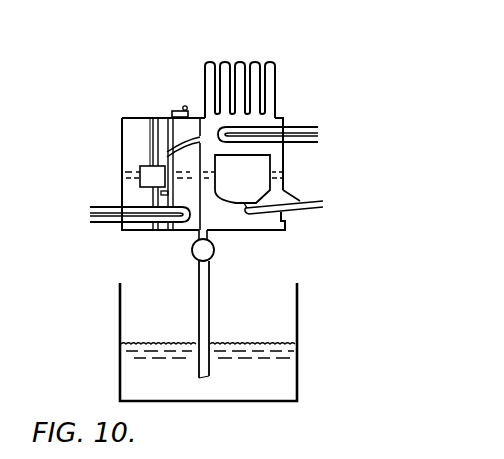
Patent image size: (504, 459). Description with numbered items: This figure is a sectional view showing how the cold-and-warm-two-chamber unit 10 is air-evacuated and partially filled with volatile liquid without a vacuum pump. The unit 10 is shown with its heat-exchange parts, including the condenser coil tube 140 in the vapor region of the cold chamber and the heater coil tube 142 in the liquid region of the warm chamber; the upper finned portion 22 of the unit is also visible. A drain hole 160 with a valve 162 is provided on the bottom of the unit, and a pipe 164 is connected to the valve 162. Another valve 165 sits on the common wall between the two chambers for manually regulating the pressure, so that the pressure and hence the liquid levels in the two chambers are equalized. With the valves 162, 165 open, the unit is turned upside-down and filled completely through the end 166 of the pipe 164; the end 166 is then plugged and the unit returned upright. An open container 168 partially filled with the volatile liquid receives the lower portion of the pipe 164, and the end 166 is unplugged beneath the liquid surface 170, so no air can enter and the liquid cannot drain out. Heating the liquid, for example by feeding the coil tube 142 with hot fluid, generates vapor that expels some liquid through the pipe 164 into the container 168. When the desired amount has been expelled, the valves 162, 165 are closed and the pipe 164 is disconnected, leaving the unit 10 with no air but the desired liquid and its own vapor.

The cold-and-warm-two-chamber unit 10 is at (135, 68).
The heat sink fins / melt block 22 is at (290, 80).
The coil tube 140 is at (296, 127).
The coil tube 142 is at (135, 224).
The drain hole 160 is at (205, 228).
The valve 162 is at (214, 250).
The pipe 164 is at (211, 306).
The valve 165 is at (194, 130).
The end of pipe 166 is at (209, 377).
The open container 168 is at (298, 372).
The liquid surface 170 is at (170, 342).